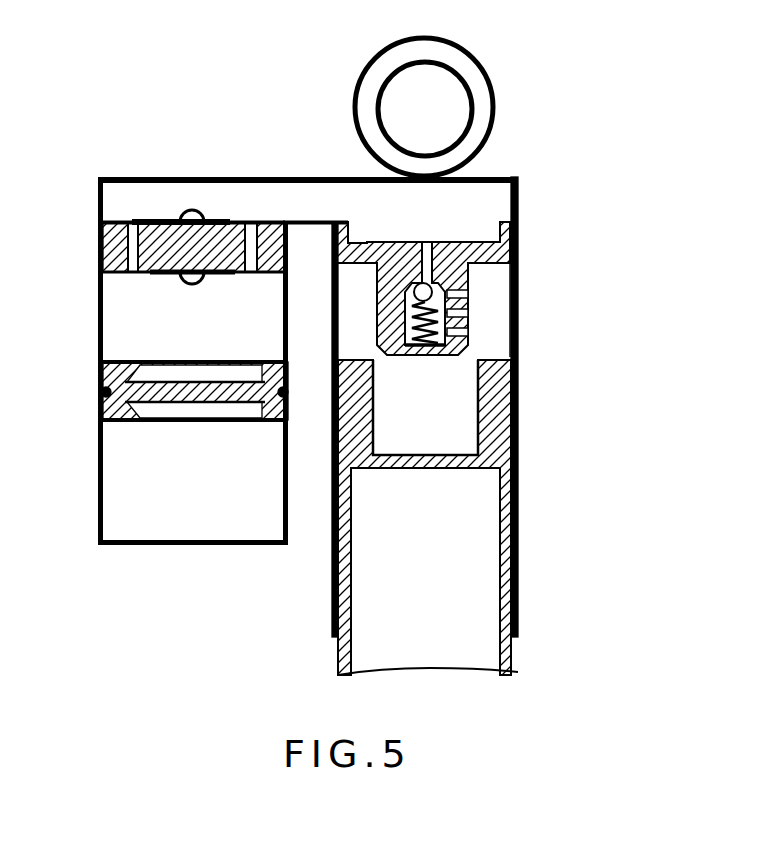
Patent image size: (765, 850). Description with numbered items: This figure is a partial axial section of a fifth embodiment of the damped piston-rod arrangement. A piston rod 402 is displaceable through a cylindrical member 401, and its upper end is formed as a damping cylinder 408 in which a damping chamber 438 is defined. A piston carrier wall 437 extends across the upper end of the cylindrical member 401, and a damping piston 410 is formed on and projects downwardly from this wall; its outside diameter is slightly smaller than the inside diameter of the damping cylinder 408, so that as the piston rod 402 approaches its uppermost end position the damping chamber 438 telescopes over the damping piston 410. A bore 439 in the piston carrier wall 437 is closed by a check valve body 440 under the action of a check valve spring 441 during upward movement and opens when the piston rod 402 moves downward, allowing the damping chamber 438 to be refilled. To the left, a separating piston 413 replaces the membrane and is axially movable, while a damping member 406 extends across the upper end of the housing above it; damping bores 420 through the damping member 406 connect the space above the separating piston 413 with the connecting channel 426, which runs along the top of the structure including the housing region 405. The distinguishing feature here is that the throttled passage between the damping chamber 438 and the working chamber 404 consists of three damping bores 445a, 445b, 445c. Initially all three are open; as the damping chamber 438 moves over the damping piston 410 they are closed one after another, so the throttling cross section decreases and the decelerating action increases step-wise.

The cylindrical member 401 is at (520, 572).
The piston rod 402 is at (500, 452).
The working chamber 404 is at (500, 322).
The cylinder 405 is at (115, 524).
The damping member 406 is at (112, 245).
The damping cylinder 408 is at (468, 420).
The damping piston 410 is at (470, 279).
The separating piston 413 is at (157, 392).
The damping bores 420 is at (130, 228).
The connecting channel 426 is at (302, 187).
The piston carrier wall 437 is at (511, 240).
The damping chamber 438 is at (367, 243).
The bore 439 is at (427, 280).
The check valve body 440 is at (432, 280).
The check valve spring 441 is at (413, 325).
The damping bore 445a is at (450, 294).
The damping bore 445b is at (455, 313).
The damping bore 445c is at (455, 333).